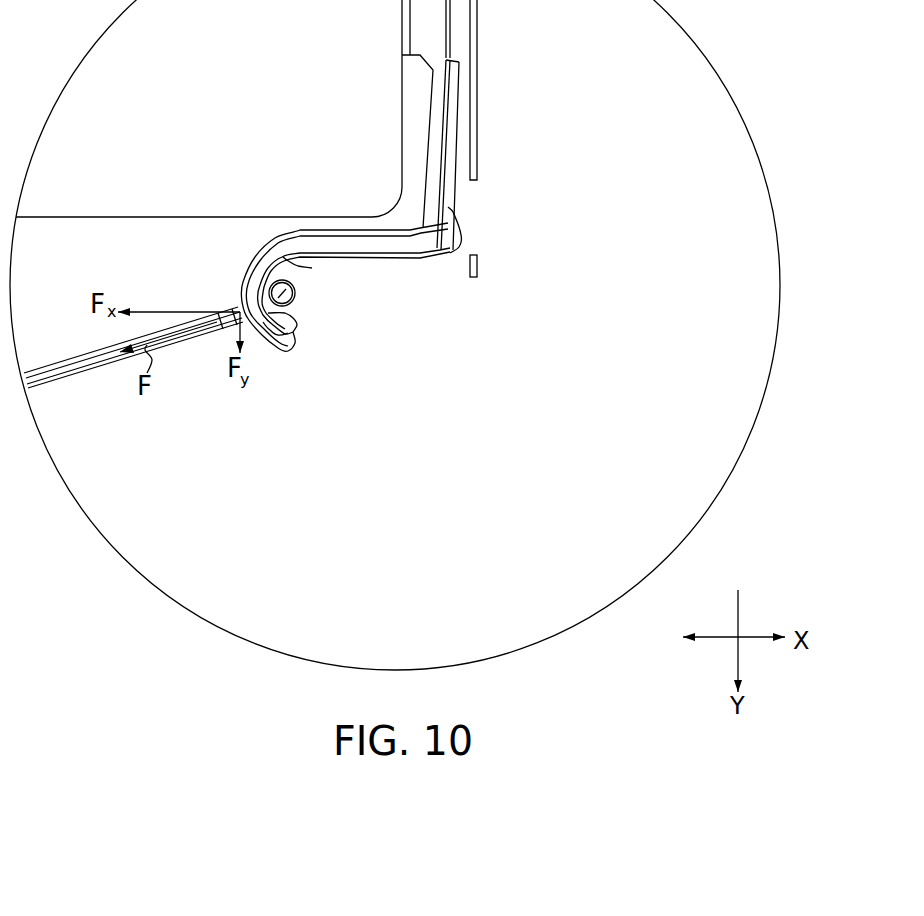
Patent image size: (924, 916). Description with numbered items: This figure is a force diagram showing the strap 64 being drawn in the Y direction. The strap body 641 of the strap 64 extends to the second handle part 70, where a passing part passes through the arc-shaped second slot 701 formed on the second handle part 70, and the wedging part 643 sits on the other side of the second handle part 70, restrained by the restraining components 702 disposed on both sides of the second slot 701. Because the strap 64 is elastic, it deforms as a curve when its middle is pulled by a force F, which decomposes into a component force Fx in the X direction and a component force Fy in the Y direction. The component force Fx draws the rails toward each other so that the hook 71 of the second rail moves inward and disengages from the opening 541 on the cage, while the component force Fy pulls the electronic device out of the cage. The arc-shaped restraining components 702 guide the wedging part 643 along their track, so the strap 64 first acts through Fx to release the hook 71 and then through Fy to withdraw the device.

The opening 541 is at (475, 209).
The hook 71 is at (462, 237).
The second handle part 70 is at (280, 347).
The second slot 701 is at (305, 295).
The restraining component 702 is at (302, 265).
The wedging part 643 is at (260, 350).
The strap 64 is at (133, 354).
The strap body 641 is at (83, 366).